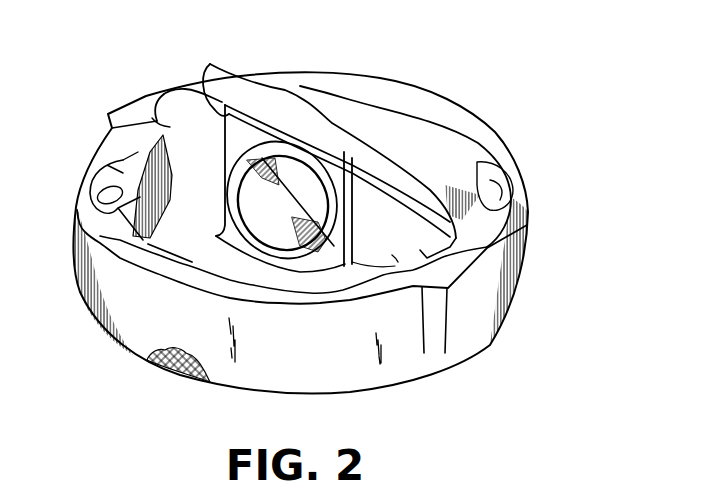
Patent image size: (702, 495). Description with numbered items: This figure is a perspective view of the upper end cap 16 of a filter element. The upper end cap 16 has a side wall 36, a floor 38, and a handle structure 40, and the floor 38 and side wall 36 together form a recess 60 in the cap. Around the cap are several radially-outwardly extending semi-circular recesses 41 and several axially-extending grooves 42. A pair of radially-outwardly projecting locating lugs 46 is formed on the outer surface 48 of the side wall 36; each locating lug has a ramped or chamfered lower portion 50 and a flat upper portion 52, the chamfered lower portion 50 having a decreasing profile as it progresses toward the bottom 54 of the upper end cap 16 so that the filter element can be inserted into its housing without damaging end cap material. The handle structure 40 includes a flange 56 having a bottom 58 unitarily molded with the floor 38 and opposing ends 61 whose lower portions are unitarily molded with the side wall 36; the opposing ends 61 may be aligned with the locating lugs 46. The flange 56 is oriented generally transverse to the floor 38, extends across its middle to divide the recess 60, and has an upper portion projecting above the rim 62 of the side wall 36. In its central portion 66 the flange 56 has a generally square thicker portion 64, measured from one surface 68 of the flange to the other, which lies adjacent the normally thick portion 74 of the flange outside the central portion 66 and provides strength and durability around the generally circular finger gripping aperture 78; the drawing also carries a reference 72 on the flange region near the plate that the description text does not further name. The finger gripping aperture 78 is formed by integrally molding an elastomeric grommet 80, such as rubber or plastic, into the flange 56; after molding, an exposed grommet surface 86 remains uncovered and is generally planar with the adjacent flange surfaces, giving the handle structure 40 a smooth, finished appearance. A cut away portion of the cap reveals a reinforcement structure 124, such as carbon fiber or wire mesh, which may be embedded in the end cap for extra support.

The upper end cap 16 is at (475, 82).
The side wall 36 is at (241, 381).
The floor 38 is at (110, 240).
The handle structure 40 is at (247, 93).
The semi-circular recesses 41 is at (110, 200).
The axially-extending grooves 42 is at (93, 183).
The locating lugs 46 is at (125, 98).
The outer surface 48 is at (289, 353).
The chamfered lower portion 50 is at (461, 352).
The flat upper portion 52 is at (495, 262).
The bottom 54 is at (300, 398).
The flange 56 is at (190, 103).
The bottom 58 is at (185, 203).
The recess 60 is at (384, 123).
The opposing ends 61 is at (152, 118).
The rim 62 is at (494, 148).
The thicker portion 64 is at (213, 95).
The central portion 66 is at (218, 170).
The surface 68 is at (232, 144).
The slot 72 is at (357, 222).
The normally thick portion 74 is at (368, 203).
The finger gripping aperture 78 is at (262, 218).
The grommet 80 is at (296, 160).
The exposed grommet surface 86 is at (292, 268).
The reinforcement structure 124 is at (157, 377).